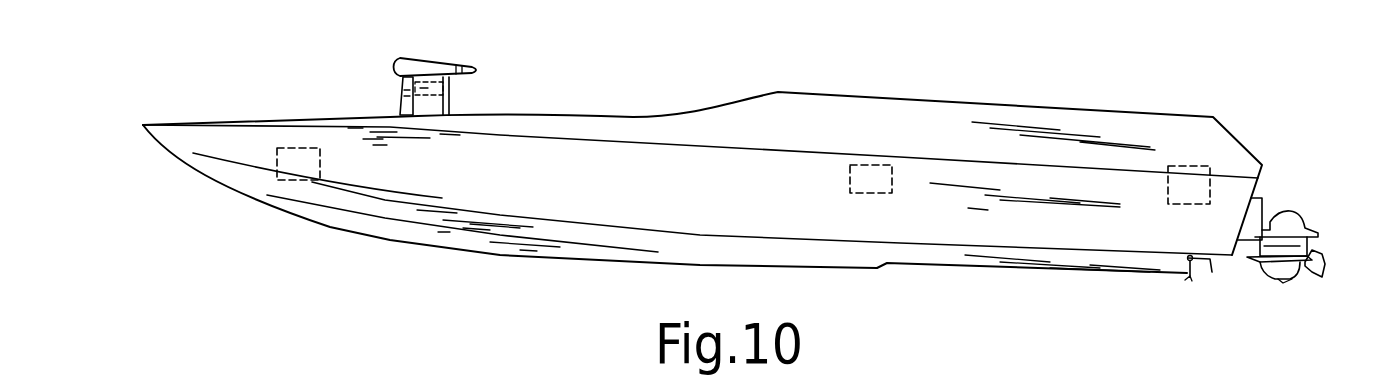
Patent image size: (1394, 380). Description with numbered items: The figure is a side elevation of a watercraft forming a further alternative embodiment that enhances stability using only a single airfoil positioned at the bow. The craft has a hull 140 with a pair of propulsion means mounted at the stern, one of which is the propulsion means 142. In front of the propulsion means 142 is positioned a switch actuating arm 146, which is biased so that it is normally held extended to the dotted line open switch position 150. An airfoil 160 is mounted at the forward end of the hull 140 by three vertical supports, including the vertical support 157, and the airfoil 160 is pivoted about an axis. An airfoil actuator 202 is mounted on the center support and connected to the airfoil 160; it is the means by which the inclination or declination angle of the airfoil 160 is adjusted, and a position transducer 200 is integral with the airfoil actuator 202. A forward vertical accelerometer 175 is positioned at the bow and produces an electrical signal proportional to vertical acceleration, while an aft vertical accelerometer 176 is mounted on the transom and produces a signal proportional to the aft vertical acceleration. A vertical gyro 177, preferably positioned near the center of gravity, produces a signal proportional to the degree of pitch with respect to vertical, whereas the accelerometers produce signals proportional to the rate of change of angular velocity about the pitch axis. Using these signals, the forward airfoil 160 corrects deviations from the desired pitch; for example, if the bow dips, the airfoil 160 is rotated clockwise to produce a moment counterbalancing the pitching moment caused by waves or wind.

The hull 140 is at (790, 88).
The propulsion means 142 is at (1325, 241).
The switch actuating arm 146 is at (1208, 264).
The open switch position 150 is at (1185, 280).
The vertical support 157 is at (438, 106).
The airfoil 160 is at (418, 68).
The forward vertical accelerometer 175 is at (301, 148).
The aft vertical accelerometer 176 is at (1207, 167).
The vertical gyro 177 is at (877, 163).
The position transducer 200 is at (444, 84).
The airfoil actuator 202 is at (491, 80).